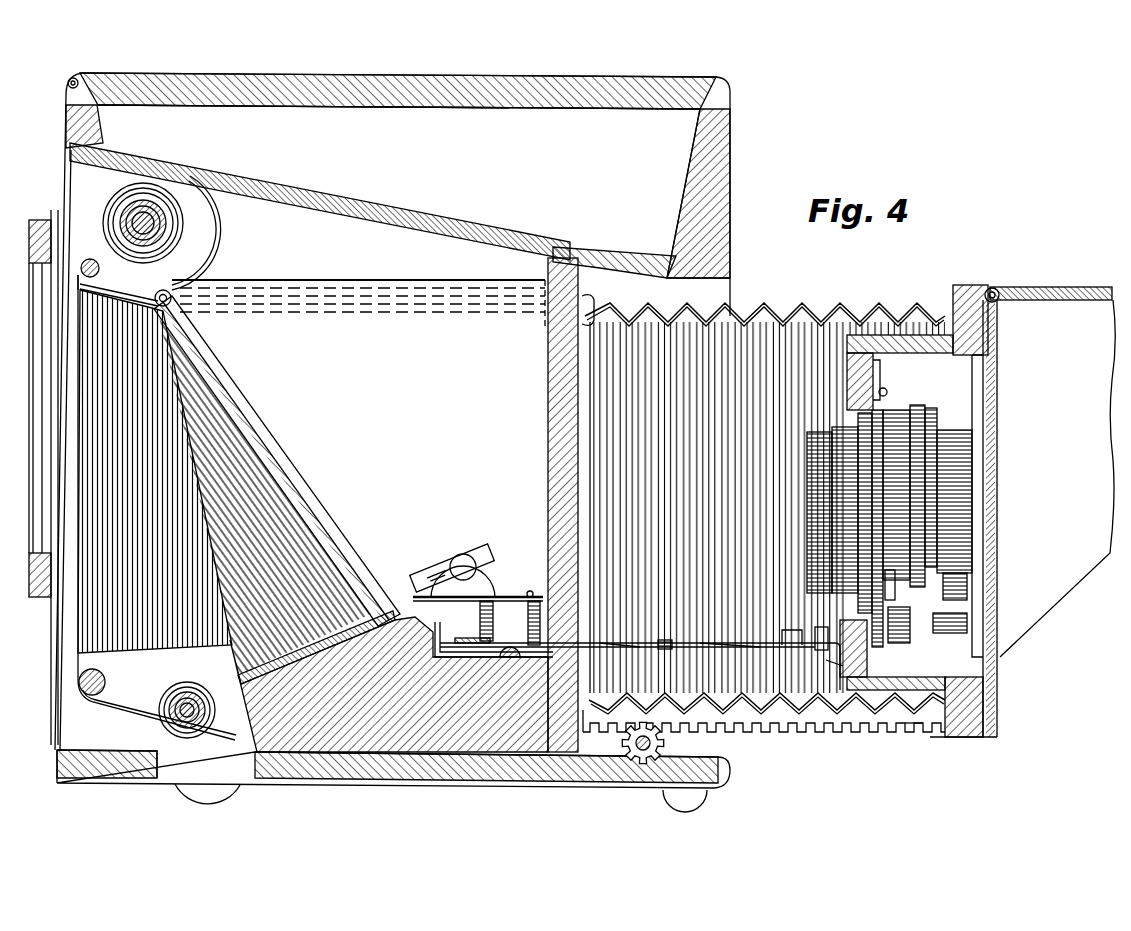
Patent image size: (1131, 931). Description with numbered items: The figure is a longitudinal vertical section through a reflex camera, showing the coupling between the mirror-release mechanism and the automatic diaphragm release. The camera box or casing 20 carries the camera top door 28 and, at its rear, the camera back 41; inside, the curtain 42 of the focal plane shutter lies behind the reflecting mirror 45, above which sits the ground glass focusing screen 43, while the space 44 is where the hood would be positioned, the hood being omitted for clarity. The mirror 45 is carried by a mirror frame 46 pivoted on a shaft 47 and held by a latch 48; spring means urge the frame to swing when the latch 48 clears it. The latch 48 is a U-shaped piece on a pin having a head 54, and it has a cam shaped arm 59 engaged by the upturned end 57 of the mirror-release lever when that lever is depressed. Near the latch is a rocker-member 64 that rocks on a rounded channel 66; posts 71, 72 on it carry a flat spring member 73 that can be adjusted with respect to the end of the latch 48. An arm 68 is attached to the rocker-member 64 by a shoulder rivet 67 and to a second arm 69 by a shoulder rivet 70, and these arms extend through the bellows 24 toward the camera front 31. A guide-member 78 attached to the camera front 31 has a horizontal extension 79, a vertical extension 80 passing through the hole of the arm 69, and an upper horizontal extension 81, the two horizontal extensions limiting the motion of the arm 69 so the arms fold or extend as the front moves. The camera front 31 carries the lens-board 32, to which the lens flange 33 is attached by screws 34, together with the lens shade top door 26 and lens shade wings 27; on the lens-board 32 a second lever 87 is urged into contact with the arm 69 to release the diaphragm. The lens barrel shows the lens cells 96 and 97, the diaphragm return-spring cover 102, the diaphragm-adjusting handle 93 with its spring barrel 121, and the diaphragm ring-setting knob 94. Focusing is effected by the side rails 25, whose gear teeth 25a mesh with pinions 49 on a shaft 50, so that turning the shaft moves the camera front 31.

The camera box or casing 20 is at (732, 147).
The bellows 24 is at (790, 313).
The camera front side rails 25 is at (860, 735).
The gear teeth 25a is at (915, 735).
The lens shade top door 26 is at (1040, 287).
The lens shade wings 27 is at (1087, 330).
The camera top door 28 is at (656, 90).
The camera front 31 is at (975, 286).
The lens-board 32 is at (870, 661).
The lens flange 33 is at (882, 373).
The screws 34 is at (886, 392).
The camera back 41 is at (42, 338).
The curtain 42 is at (82, 268).
The ground glass focusing screen 43 is at (416, 210).
The hood space 44 is at (534, 123).
The reflecting mirror 45 is at (305, 477).
The mirror frame 46 is at (546, 322).
The shaft 47 is at (177, 306).
The latch 48 is at (441, 560).
The pinions 49 is at (666, 745).
The shaft 50 is at (643, 750).
The head 54 is at (466, 556).
The upturned end 57 is at (505, 592).
The cam shaped arm 59 is at (496, 562).
The rocker-member 64 is at (440, 632).
The rounded channel 66 is at (511, 652).
The shoulder rivet 67 is at (468, 638).
The arm 68 is at (619, 643).
The second arm 69 is at (731, 643).
The shoulder rivet 70 is at (664, 641).
The post 71 is at (493, 611).
The post 72 is at (540, 611).
The flat spring member 73 is at (528, 597).
The guide-member 78 is at (822, 702).
The horizontal extension 79 is at (836, 657).
The vertical extension 80 is at (800, 648).
The upper horizontal extension 81 is at (786, 636).
The second lever 87 is at (822, 634).
The diaphragm-adjusting handle 93 is at (970, 586).
The diaphragm ring-setting knob 94 is at (968, 623).
The lens cell 96 is at (962, 434).
The lens cell 97 is at (818, 492).
The diaphragm return-spring cover 102 is at (932, 420).
The barrel 121 is at (912, 605).